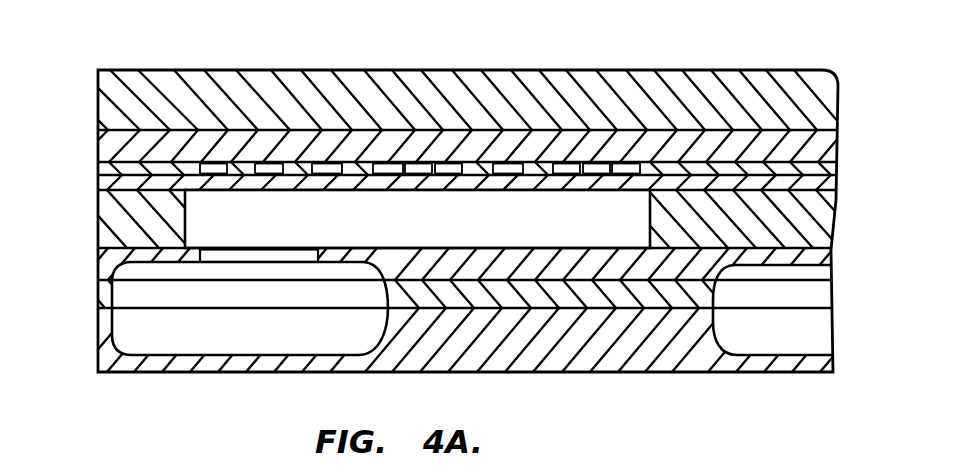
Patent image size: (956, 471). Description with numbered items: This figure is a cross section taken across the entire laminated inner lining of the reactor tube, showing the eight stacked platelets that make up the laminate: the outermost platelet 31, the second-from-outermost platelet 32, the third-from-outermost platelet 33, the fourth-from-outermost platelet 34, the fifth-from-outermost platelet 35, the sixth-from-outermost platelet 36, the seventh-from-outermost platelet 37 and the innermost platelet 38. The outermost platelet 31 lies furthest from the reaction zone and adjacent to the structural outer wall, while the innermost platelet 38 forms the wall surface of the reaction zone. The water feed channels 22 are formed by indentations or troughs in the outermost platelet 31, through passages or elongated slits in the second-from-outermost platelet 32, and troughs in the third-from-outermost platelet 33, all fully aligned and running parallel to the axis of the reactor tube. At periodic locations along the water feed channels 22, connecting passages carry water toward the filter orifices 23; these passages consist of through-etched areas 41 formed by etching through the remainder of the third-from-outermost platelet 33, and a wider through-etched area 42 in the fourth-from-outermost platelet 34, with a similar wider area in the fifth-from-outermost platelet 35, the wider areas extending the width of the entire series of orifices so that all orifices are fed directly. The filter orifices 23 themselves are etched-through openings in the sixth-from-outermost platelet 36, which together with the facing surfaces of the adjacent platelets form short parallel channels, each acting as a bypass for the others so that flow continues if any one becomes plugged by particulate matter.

The water feed channels 22 is at (243, 333).
The filter orifices 23 is at (567, 167).
The outermost platelet 31 is at (98, 102).
The second-from-outermost platelet 32 is at (98, 142).
The third-from-outermost platelet 33 is at (438, 98).
The fourth-from-outermost platelet 34 is at (100, 180).
The fifth-from-outermost platelet 35 is at (452, 134).
The sixth-from-outermost platelet 36 is at (450, 153).
The seventh-from-outermost platelet 37 is at (98, 293).
The innermost platelet 38 is at (100, 340).
The through-etched areas 41 is at (255, 257).
The wider through-etched area 42 is at (372, 213).